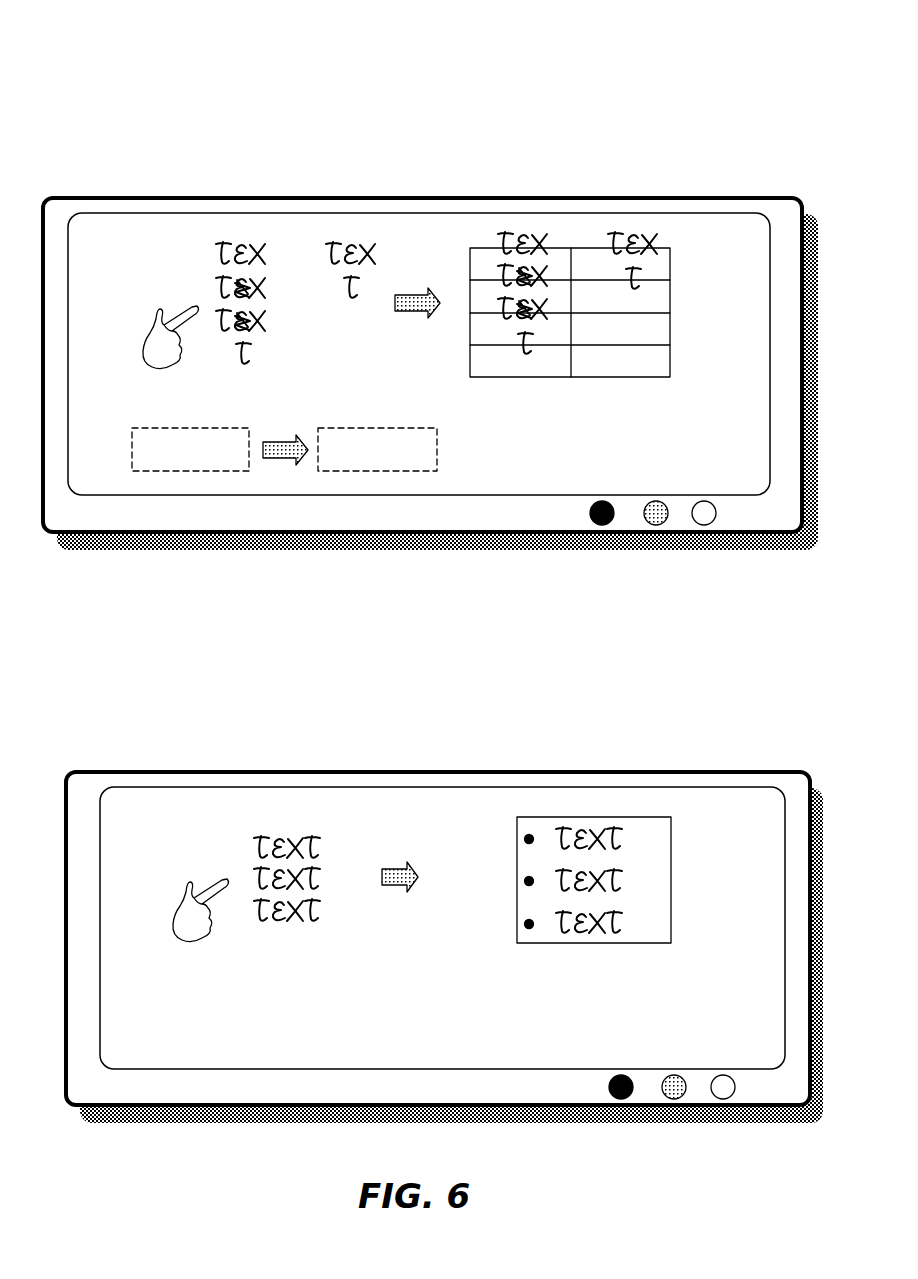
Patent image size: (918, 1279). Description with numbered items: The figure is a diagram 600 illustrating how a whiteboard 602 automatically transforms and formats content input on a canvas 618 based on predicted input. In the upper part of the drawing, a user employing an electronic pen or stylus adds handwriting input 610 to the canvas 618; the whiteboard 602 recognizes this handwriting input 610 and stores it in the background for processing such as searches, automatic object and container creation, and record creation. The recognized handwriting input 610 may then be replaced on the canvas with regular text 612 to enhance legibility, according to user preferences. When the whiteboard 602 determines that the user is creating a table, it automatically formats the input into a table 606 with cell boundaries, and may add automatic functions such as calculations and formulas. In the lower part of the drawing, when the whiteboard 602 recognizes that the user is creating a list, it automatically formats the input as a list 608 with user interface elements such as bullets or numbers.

The diagram 600 is at (722, 38).
The whiteboard 602 is at (153, 190).
The canvas 618 is at (351, 208).
The table 606 is at (551, 247).
The list 608 is at (536, 815).
The handwriting input 610 is at (200, 421).
The regular text 612 is at (418, 421).